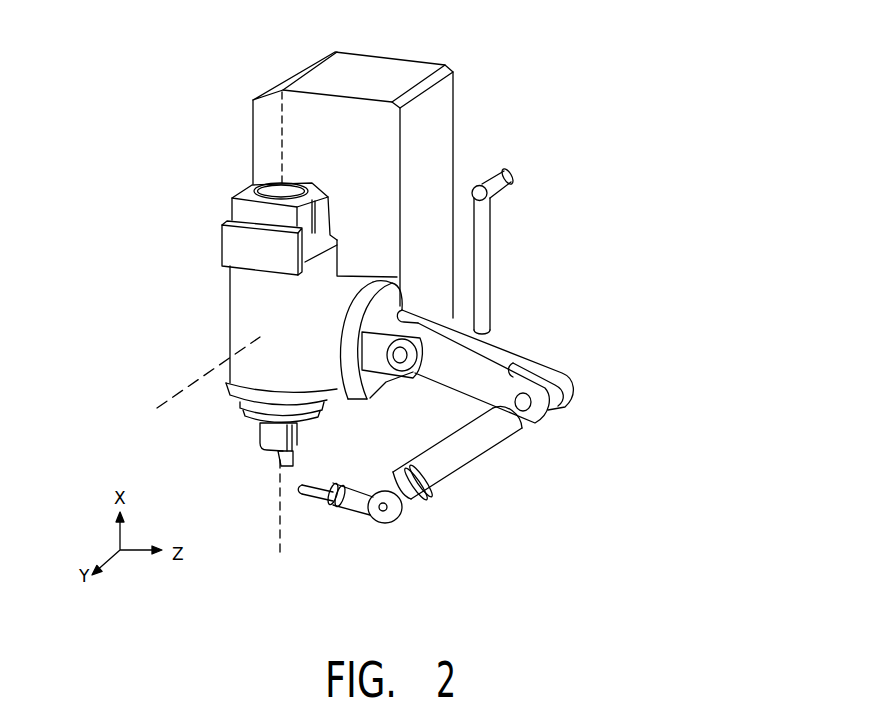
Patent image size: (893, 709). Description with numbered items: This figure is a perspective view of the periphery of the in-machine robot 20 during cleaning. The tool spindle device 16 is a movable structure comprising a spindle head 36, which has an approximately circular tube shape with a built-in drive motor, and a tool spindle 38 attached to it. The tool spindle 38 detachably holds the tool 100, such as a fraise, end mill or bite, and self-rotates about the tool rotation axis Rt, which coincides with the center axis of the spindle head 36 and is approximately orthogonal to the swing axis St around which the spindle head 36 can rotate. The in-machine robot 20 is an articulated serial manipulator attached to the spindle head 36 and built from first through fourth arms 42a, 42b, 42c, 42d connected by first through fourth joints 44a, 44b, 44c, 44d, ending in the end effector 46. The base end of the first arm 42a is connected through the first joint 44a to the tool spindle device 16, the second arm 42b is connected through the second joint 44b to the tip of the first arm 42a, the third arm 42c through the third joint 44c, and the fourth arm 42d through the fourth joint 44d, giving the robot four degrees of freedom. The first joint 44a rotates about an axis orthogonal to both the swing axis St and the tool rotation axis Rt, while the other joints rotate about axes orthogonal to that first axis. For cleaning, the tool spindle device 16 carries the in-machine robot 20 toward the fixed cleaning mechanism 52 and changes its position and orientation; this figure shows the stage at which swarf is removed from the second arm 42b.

The tool spindle device 16 is at (258, 172).
The spindle head 36 is at (242, 315).
The tool spindle 38 is at (253, 425).
The tool 100 is at (275, 446).
The in-machine robot 20 is at (590, 362).
The first arm 42a is at (381, 372).
The second arm 42b is at (500, 352).
The third arm 42c is at (438, 497).
The fourth arm 42d is at (350, 508).
The first joint 44a is at (346, 388).
The second joint 44b is at (393, 350).
The third joint 44c is at (522, 411).
The fourth joint 44d is at (390, 517).
The end effector 46 is at (313, 494).
The cleaning mechanism 52 is at (487, 263).
The swing axis St is at (195, 383).
The tool rotation axis Rt is at (276, 520).